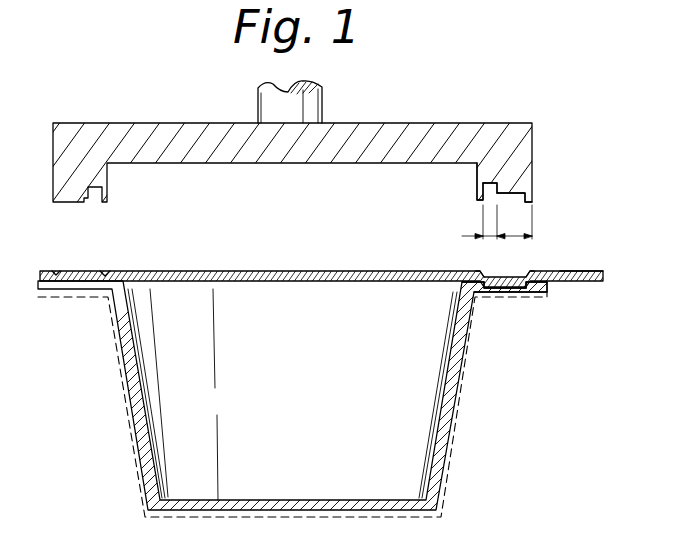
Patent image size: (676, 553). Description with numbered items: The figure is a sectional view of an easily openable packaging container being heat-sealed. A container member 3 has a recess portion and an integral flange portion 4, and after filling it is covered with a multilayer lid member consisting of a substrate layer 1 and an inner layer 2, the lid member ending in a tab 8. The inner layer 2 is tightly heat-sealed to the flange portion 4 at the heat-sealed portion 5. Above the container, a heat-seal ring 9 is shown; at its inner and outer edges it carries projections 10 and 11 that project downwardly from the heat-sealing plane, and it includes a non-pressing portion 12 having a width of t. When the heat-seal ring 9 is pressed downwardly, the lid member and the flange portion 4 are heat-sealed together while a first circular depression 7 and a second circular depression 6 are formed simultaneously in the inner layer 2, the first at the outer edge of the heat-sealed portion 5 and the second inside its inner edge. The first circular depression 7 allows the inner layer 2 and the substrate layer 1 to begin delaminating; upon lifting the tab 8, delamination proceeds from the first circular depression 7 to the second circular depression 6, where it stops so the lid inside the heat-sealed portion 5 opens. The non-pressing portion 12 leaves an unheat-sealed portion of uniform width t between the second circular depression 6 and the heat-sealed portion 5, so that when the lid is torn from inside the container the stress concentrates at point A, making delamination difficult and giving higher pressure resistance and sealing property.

The substrate layer 1 is at (603, 276).
The inner layer 2 is at (606, 284).
The container member 3 is at (450, 462).
The flange portion 4 is at (530, 295).
The heat-sealed portion 5 is at (518, 295).
The second circular depression 6 is at (481, 273).
The first circular depression 7 is at (530, 272).
The tab 8 is at (583, 270).
The heat-seal ring 9 is at (448, 132).
The projection 10 is at (536, 203).
The projection 11 is at (476, 202).
The non-pressing portion 12 is at (503, 170).
The point A is at (487, 295).